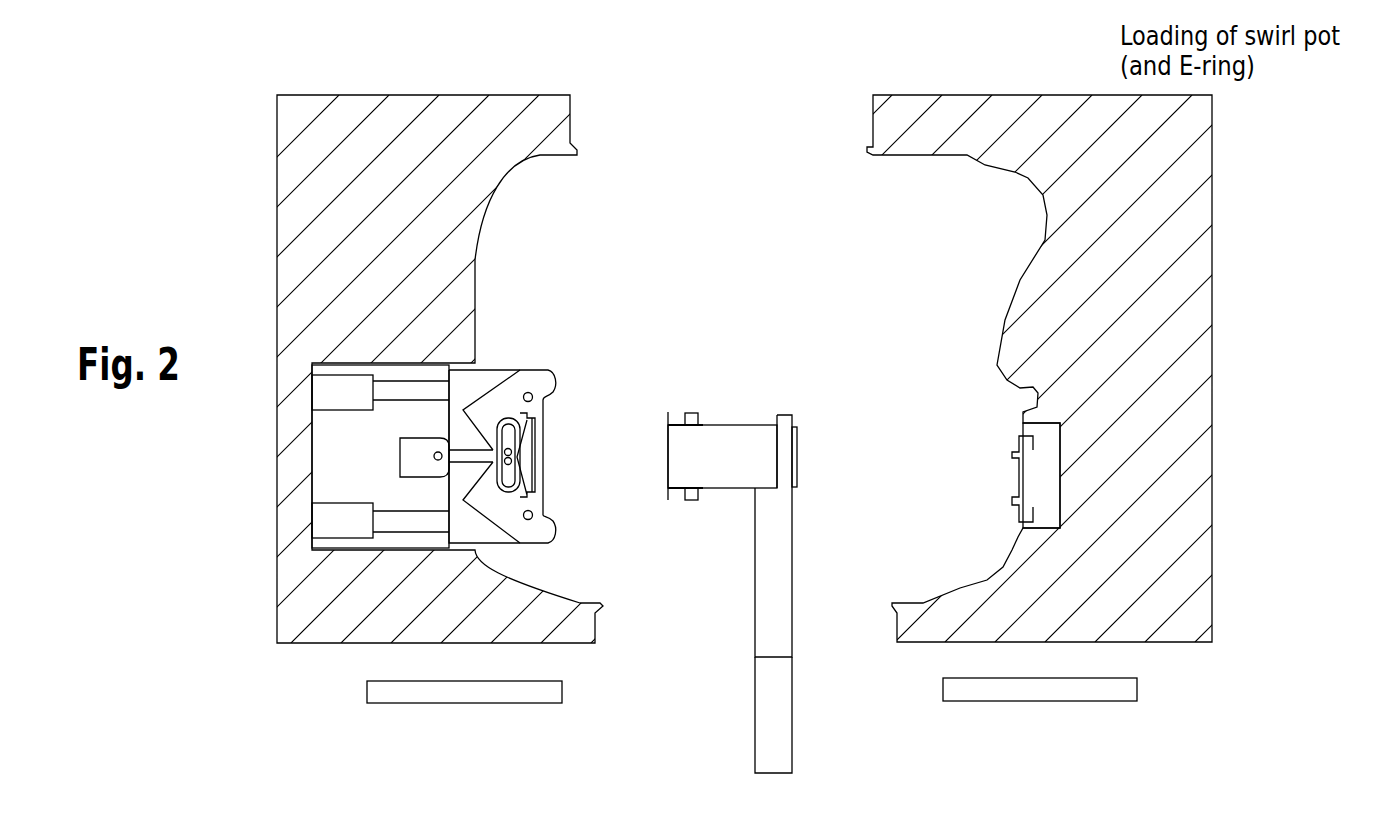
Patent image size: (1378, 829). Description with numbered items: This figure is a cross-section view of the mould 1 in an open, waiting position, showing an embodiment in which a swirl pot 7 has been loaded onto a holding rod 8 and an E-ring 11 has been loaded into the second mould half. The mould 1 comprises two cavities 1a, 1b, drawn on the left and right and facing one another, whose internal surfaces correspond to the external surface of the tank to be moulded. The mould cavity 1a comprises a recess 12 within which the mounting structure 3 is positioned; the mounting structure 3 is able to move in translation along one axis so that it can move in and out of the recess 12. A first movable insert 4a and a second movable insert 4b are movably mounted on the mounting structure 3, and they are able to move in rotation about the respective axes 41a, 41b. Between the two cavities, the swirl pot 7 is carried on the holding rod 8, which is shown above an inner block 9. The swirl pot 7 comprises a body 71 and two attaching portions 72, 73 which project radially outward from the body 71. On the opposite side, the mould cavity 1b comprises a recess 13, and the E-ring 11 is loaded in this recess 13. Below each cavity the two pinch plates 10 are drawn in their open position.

The mould 1 is at (803, 92).
The mould cavity 1a is at (457, 108).
The mould cavity 1b is at (962, 108).
The mounting structure 3 is at (486, 383).
The first movable insert 4a is at (534, 378).
The second movable insert 4b is at (540, 527).
The axis 41a is at (533, 401).
The axis 41b is at (533, 512).
The swirl pot 7 is at (735, 445).
The body 71 is at (735, 433).
The attaching portion 72 is at (670, 497).
The attaching portion 73 is at (670, 416).
The holding rod 8 is at (777, 580).
The inner block 9 is at (777, 722).
The pinch plates 10 is at (517, 690).
The E-ring 11 is at (1016, 450).
The recess 12 is at (353, 488).
The recess 13 is at (1040, 438).